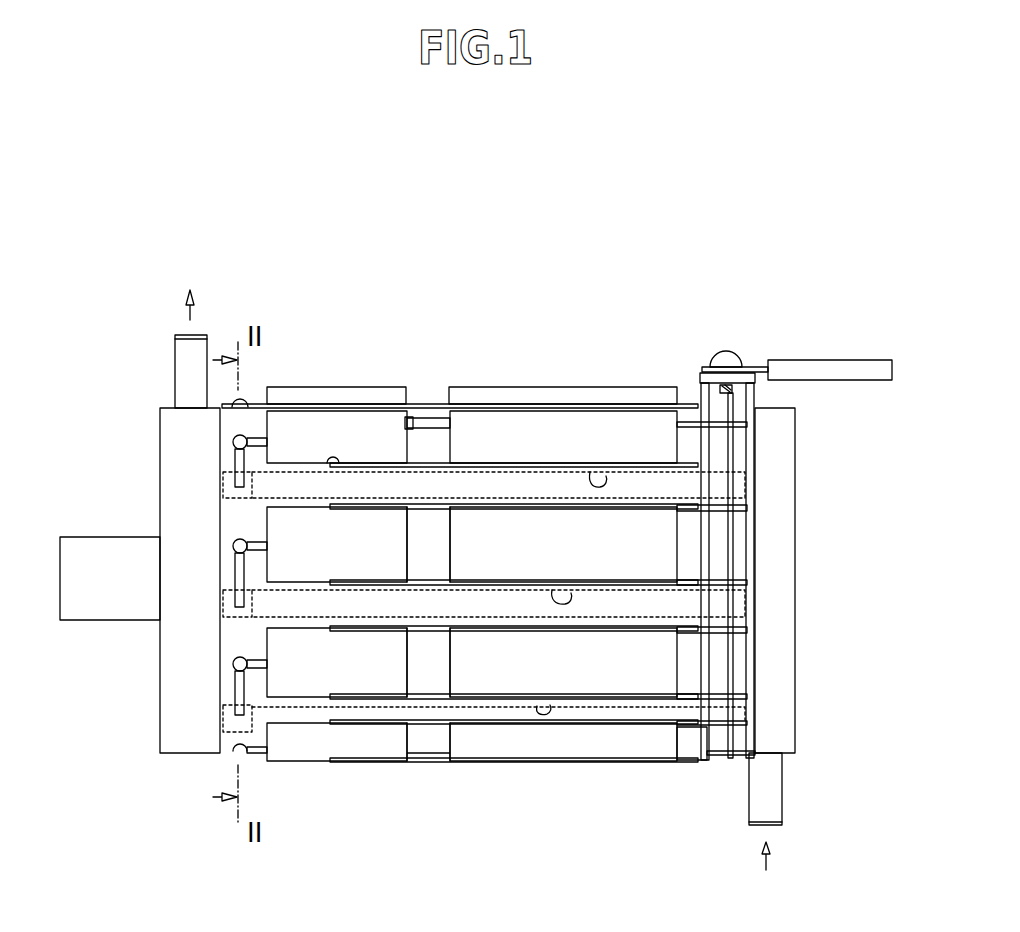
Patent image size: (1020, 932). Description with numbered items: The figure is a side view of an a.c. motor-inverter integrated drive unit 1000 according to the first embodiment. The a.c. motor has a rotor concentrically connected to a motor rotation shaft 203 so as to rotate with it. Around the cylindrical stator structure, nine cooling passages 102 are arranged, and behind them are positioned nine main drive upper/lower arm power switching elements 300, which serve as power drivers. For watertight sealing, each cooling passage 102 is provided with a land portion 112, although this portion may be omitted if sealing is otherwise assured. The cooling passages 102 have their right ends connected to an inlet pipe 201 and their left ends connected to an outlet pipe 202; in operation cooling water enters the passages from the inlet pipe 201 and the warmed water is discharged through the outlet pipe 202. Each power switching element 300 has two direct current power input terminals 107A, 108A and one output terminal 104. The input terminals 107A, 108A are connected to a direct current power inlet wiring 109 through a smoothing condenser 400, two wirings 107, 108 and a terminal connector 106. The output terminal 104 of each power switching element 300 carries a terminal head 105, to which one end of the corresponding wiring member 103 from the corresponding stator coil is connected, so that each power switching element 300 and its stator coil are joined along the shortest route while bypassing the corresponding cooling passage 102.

The a.c. motor-inverter integrated drive unit 1000 is at (840, 181).
The cooling passage 102 is at (537, 697).
The wiring member 103 is at (233, 461).
The output terminal 104 is at (291, 405).
The terminal head 105 is at (233, 437).
The terminal connector 106 is at (725, 355).
The wiring 107 is at (740, 426).
The direct current power input terminal 107A is at (411, 422).
The wiring 108 is at (738, 472).
The direct current power input terminal 108A is at (333, 462).
The direct current power inlet wiring 109 is at (822, 362).
The land portion 112 is at (222, 487).
The inlet pipe 201 is at (767, 776).
The outlet pipe 202 is at (193, 345).
The motor rotation shaft 203 is at (108, 606).
The power switching element 300 is at (320, 412).
The smoothing condenser 400 is at (533, 425).